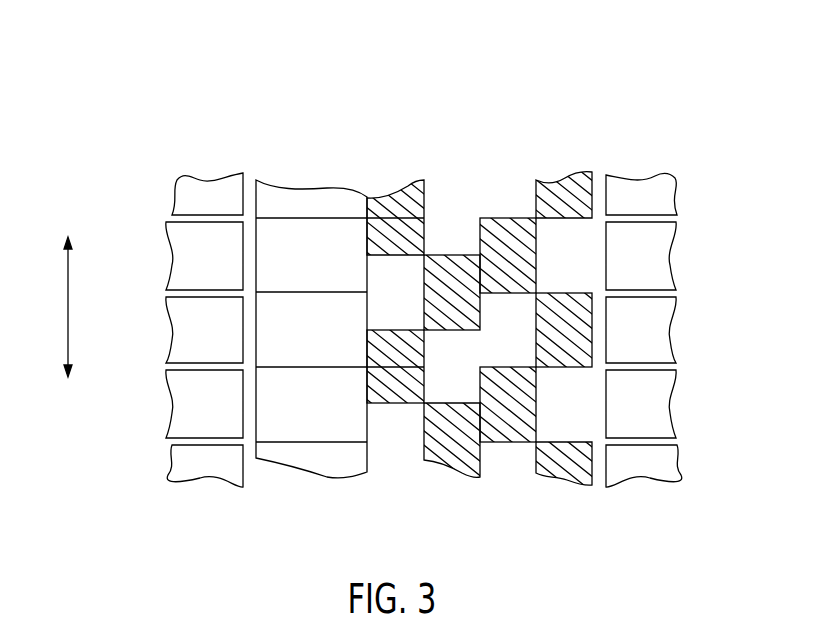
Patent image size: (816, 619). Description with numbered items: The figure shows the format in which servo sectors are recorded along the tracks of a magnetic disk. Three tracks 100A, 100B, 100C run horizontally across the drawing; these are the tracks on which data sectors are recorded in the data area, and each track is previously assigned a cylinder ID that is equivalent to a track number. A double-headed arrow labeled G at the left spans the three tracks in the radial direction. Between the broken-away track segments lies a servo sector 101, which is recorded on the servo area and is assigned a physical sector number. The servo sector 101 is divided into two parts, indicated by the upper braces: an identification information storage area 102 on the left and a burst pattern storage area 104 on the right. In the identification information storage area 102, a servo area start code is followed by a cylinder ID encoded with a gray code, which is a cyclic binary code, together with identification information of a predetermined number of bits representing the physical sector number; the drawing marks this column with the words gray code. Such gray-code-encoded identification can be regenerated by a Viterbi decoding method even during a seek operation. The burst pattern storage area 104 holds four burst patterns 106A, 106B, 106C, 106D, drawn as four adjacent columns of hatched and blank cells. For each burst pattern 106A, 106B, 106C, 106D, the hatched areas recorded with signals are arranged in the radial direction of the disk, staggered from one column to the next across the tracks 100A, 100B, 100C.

The servo sector 101 is at (592, 62).
The identification information storage area 102 is at (255, 112).
The burst pattern storage area 104 is at (368, 112).
The burst pattern 106A is at (424, 168).
The burst pattern 106B is at (480, 168).
The burst pattern 106C is at (480, 168).
The burst pattern 106D is at (536, 168).
The track 100A is at (177, 246).
The track 100B is at (177, 321).
The track 100C is at (177, 396).
The track pitch dimension G is at (55, 307).